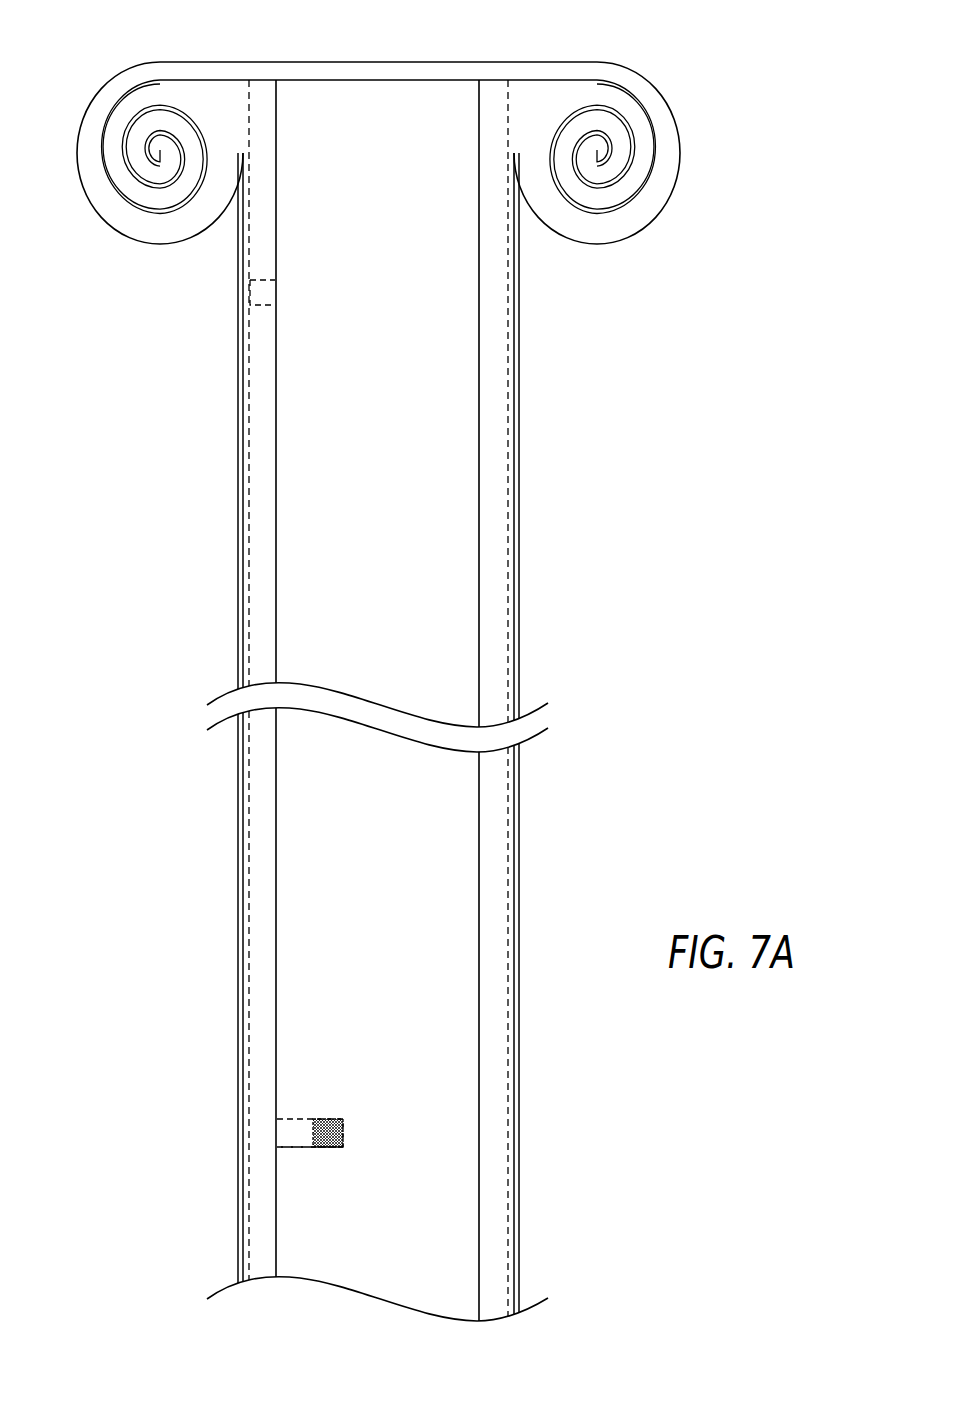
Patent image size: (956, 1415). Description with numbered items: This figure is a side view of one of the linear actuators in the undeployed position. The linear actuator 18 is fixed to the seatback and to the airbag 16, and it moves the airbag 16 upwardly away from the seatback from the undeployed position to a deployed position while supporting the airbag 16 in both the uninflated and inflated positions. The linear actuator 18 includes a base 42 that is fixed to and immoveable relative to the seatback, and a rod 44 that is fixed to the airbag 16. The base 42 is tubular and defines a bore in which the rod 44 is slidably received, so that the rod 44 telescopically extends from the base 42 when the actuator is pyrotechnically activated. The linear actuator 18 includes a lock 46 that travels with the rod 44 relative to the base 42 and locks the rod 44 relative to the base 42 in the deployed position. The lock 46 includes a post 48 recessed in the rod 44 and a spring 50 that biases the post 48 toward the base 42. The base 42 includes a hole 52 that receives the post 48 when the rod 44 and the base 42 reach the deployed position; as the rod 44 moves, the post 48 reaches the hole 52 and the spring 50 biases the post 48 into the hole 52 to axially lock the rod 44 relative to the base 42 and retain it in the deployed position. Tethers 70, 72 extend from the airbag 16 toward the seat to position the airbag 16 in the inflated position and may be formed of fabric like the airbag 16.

The airbag 16 is at (226, 62).
The linear actuator 18 is at (614, 452).
The base 42 is at (492, 425).
The rod 44 is at (472, 357).
The lock 46 is at (342, 1096).
The post 48 is at (292, 1123).
The spring 50 is at (322, 1148).
The hole 52 is at (260, 308).
The tether 70 is at (237, 520).
The tether 72 is at (520, 520).